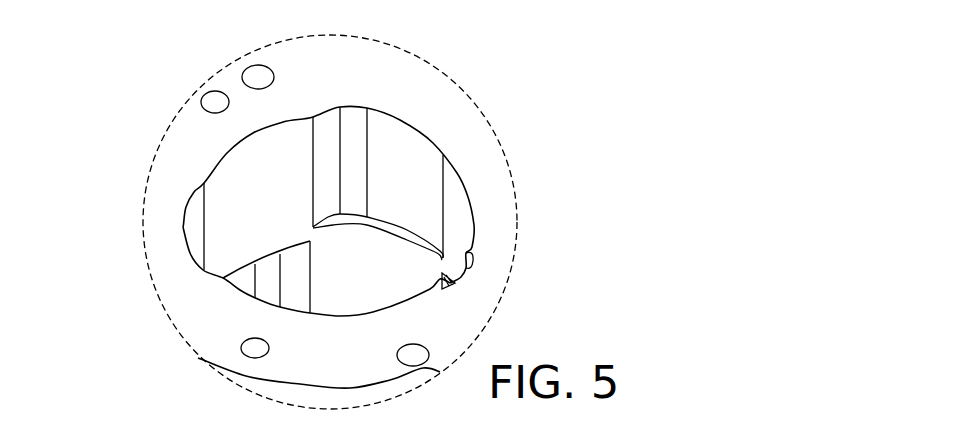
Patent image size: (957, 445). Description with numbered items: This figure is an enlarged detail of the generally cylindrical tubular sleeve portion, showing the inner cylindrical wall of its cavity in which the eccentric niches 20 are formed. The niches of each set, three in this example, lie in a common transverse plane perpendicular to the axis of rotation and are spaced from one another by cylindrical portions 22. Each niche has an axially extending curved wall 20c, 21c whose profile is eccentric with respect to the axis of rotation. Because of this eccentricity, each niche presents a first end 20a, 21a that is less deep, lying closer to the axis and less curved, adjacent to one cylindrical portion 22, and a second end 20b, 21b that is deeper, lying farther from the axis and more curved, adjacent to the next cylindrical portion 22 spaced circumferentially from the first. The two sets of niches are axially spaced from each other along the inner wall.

The eccentric niches 20 is at (260, 393).
The first end 20a is at (432, 192).
The second end 20b is at (328, 140).
The curved wall 20c is at (413, 150).
The first end 21a is at (463, 265).
The second end 21b is at (298, 280).
The curved wall 21c is at (246, 290).
The cylindrical portions 22 is at (55, 435).